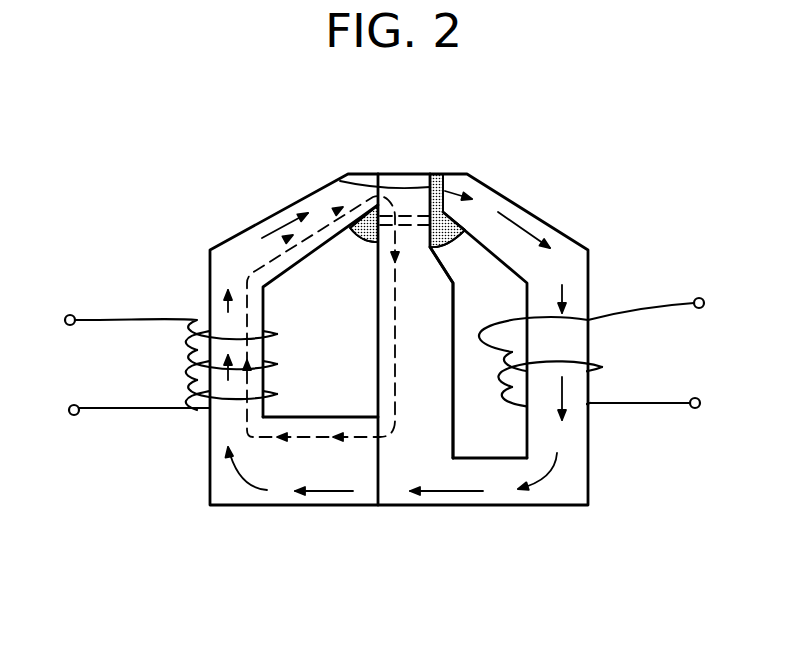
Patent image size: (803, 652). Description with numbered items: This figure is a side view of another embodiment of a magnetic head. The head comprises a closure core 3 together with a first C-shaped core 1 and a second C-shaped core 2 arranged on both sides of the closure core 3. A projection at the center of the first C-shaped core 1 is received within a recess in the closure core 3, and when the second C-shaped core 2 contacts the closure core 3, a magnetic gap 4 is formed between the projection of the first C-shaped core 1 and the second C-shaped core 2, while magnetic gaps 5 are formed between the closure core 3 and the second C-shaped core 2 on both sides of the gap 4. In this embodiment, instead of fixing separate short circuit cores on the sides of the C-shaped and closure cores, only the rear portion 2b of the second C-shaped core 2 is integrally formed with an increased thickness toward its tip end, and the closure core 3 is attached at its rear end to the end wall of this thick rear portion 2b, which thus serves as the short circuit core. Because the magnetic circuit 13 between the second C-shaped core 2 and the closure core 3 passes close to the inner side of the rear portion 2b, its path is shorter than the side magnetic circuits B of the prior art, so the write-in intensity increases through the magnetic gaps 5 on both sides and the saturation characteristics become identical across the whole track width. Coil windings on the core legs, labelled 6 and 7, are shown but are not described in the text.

The first C-shaped core 1 is at (540, 507).
The second C-shaped core 2 is at (250, 230).
The rear portion of the second C-shaped core 2b is at (277, 507).
The closure core 3 is at (446, 301).
The magnetic gap 4 is at (377, 173).
The magnetic gap 5 is at (377, 173).
The coil 6 is at (670, 406).
The coil 7 is at (127, 412).
The magnetic circuit 13 is at (352, 437).
The side magnetic circuit B is at (233, 508).